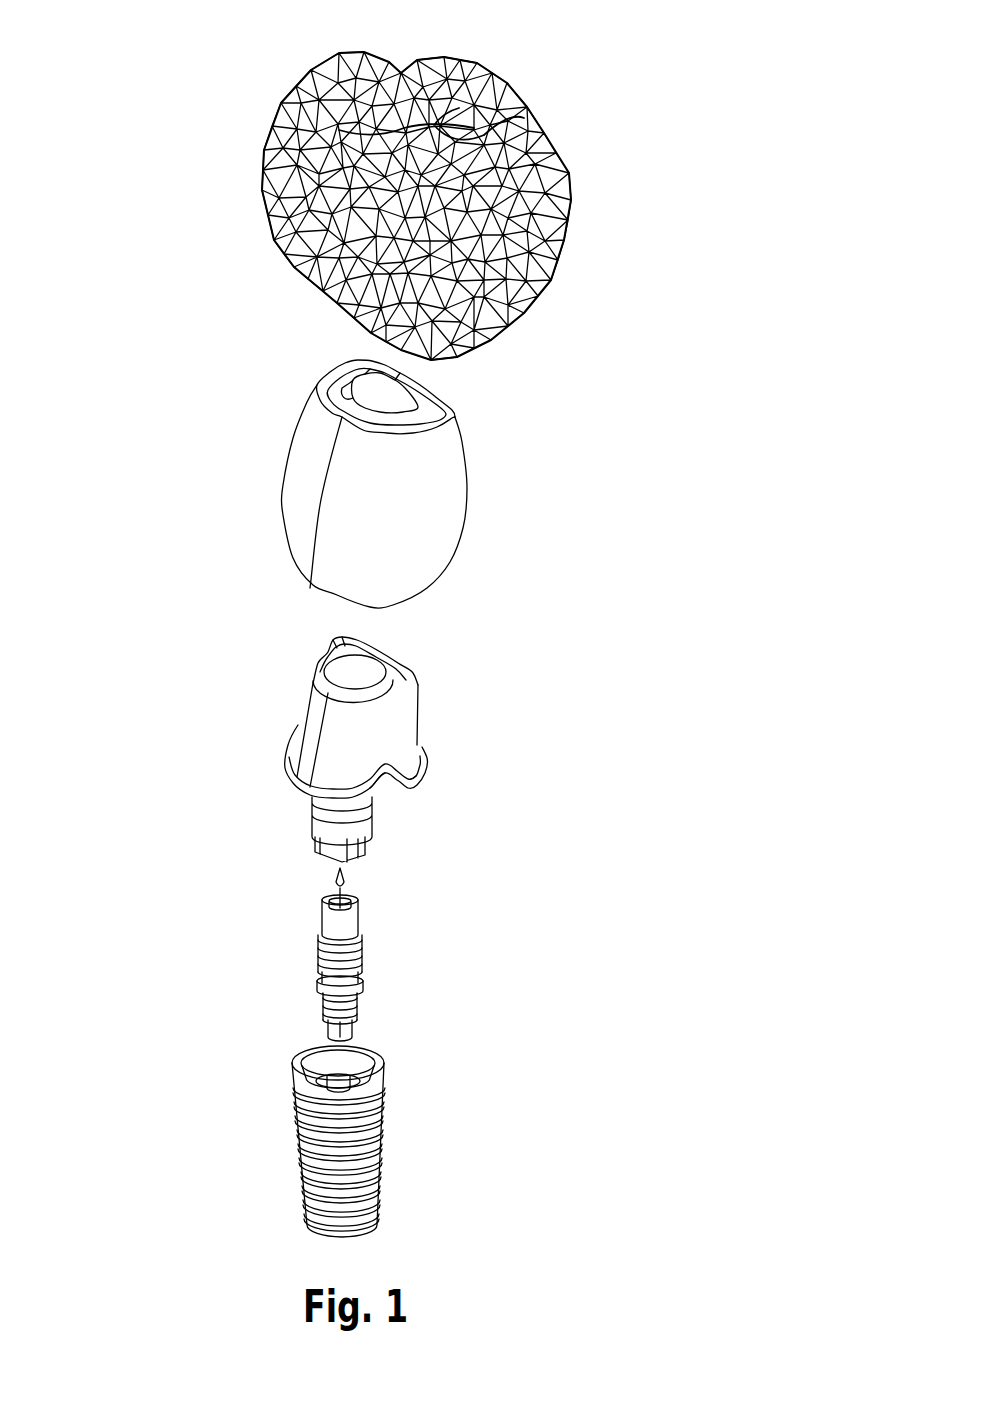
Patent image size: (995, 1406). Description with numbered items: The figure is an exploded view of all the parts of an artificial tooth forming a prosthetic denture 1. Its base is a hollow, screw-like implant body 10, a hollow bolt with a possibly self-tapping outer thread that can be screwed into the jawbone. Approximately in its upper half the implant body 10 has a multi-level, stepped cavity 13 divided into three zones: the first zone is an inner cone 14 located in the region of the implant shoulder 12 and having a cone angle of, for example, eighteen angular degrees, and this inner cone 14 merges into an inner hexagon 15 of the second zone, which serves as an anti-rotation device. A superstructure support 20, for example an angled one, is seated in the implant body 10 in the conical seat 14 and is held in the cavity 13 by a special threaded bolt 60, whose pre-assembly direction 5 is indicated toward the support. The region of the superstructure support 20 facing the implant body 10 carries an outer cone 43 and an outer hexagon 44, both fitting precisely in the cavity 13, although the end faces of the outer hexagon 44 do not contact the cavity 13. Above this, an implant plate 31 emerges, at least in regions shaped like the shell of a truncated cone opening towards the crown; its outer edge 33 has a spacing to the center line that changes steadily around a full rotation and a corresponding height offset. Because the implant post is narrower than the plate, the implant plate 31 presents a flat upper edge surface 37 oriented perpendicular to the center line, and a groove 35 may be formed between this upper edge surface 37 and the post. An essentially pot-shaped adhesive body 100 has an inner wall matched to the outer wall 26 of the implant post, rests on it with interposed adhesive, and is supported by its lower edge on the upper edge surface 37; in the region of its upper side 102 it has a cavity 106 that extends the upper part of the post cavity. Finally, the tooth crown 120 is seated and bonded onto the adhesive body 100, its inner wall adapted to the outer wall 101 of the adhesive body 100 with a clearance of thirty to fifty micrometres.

The prosthetic denture 1 is at (244, 115).
The tooth crown 120 is at (240, 214).
The adhesive body 100 is at (397, 469).
The outer wall 101 is at (427, 507).
The upper side 102 is at (417, 410).
The cavity 106 is at (397, 396).
The superstructure support 20 is at (397, 763).
The outer wall 26 is at (407, 723).
The upper edge surface 37 is at (293, 750).
The edge 33 is at (397, 754).
The groove 35 is at (418, 767).
The implant plate 31 is at (390, 785).
The outer cone 43 is at (314, 824).
The outer hexagon 44 is at (320, 848).
The pre-assembly direction 5 is at (355, 876).
The threaded bolt 60 is at (305, 951).
The implant body 10 is at (398, 1093).
The inner cone 14 is at (360, 1060).
The cavity 13 is at (395, 1060).
The implant shoulder 12 is at (370, 1073).
The inner hexagon 15 is at (343, 1083).